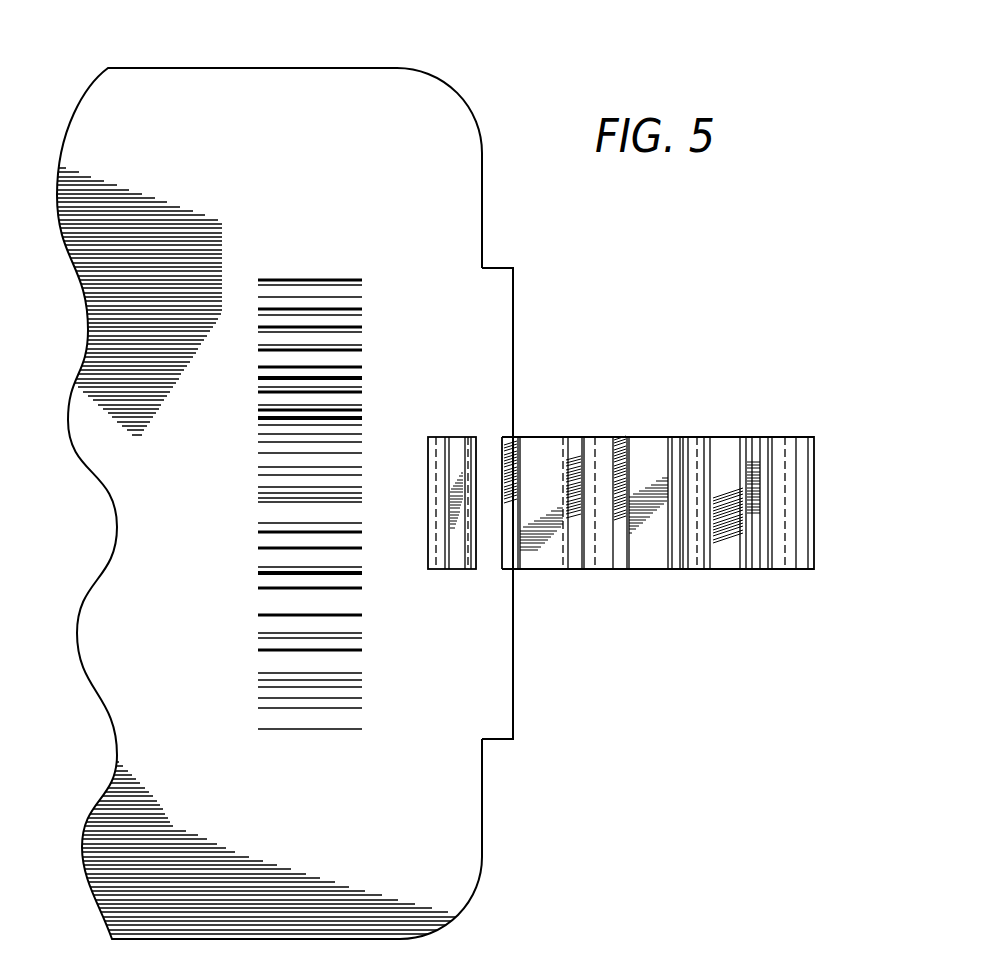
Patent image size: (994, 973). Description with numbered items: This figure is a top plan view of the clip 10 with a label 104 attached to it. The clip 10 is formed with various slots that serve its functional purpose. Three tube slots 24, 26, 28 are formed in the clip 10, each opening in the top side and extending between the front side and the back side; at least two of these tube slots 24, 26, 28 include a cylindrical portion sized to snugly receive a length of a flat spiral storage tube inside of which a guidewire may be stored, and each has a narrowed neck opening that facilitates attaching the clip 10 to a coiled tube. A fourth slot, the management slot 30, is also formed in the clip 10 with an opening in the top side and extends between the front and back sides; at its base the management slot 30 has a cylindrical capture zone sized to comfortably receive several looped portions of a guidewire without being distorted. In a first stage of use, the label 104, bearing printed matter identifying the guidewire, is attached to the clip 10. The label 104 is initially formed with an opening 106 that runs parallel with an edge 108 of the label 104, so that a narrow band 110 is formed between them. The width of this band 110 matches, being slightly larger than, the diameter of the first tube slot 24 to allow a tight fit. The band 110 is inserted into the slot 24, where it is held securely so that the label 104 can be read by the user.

The clip 10 is at (684, 479).
The first tube slot 24 is at (487, 561).
The tube slot 26 is at (599, 561).
The tube slot 28 is at (700, 556).
The management slot 30 is at (771, 513).
The label 104 is at (369, 98).
The opening 106 is at (441, 507).
The edge 108 is at (513, 655).
The narrow band 110 is at (483, 452).